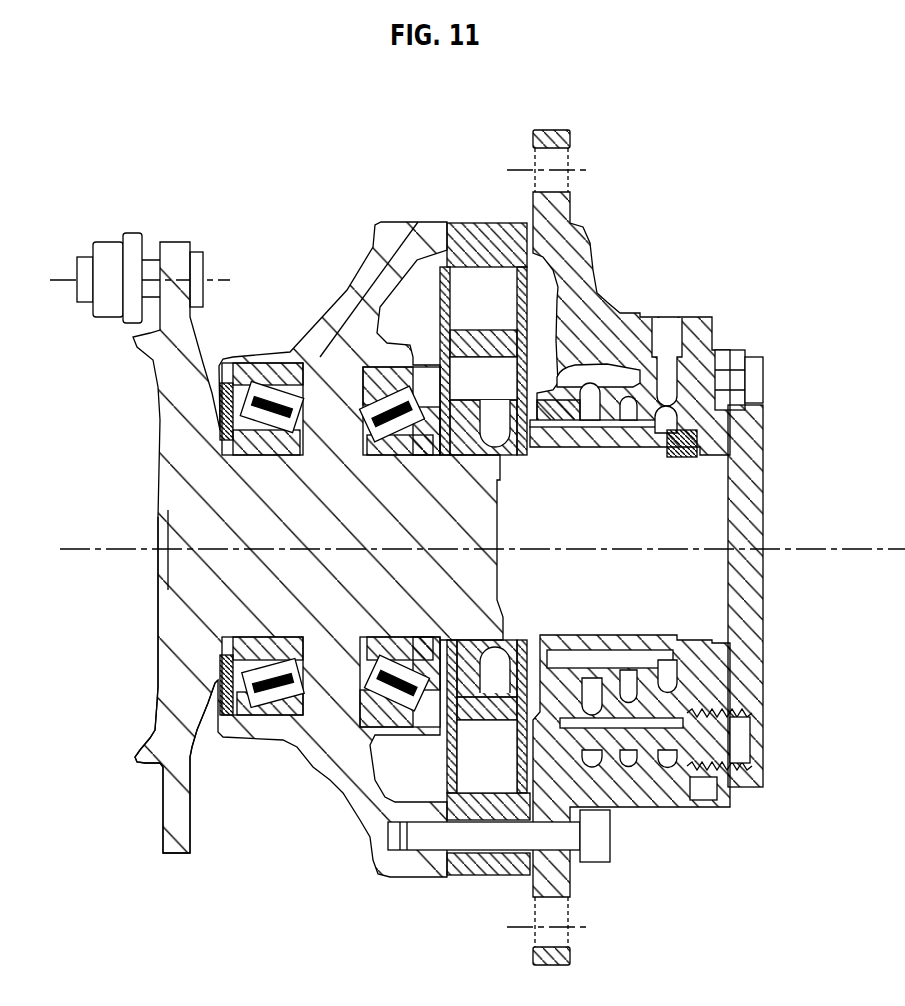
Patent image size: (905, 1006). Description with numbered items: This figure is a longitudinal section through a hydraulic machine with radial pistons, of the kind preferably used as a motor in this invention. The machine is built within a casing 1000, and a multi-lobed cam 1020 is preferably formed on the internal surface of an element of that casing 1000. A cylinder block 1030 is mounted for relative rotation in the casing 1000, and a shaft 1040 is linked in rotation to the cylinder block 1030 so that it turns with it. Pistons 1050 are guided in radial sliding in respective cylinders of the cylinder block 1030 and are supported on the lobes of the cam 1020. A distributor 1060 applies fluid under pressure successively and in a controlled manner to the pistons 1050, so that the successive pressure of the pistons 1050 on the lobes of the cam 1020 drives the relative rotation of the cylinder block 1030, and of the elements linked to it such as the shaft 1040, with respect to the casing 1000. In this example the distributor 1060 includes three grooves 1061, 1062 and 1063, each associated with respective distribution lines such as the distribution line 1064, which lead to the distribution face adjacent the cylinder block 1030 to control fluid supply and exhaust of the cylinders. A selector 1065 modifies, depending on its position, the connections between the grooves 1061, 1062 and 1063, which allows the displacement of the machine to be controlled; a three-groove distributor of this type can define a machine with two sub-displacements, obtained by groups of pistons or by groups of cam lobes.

The casing 1000 is at (630, 787).
The multi-lobed cam 1020 is at (497, 282).
The cylinder block 1030 is at (470, 425).
The shaft 1040 is at (217, 572).
The pistons 1050 is at (480, 340).
The distributor 1060 is at (612, 385).
The groove 1061 is at (578, 437).
The groove 1062 is at (627, 413).
The groove 1063 is at (667, 427).
The distribution line 1064 is at (560, 420).
The selector 1065 is at (683, 740).